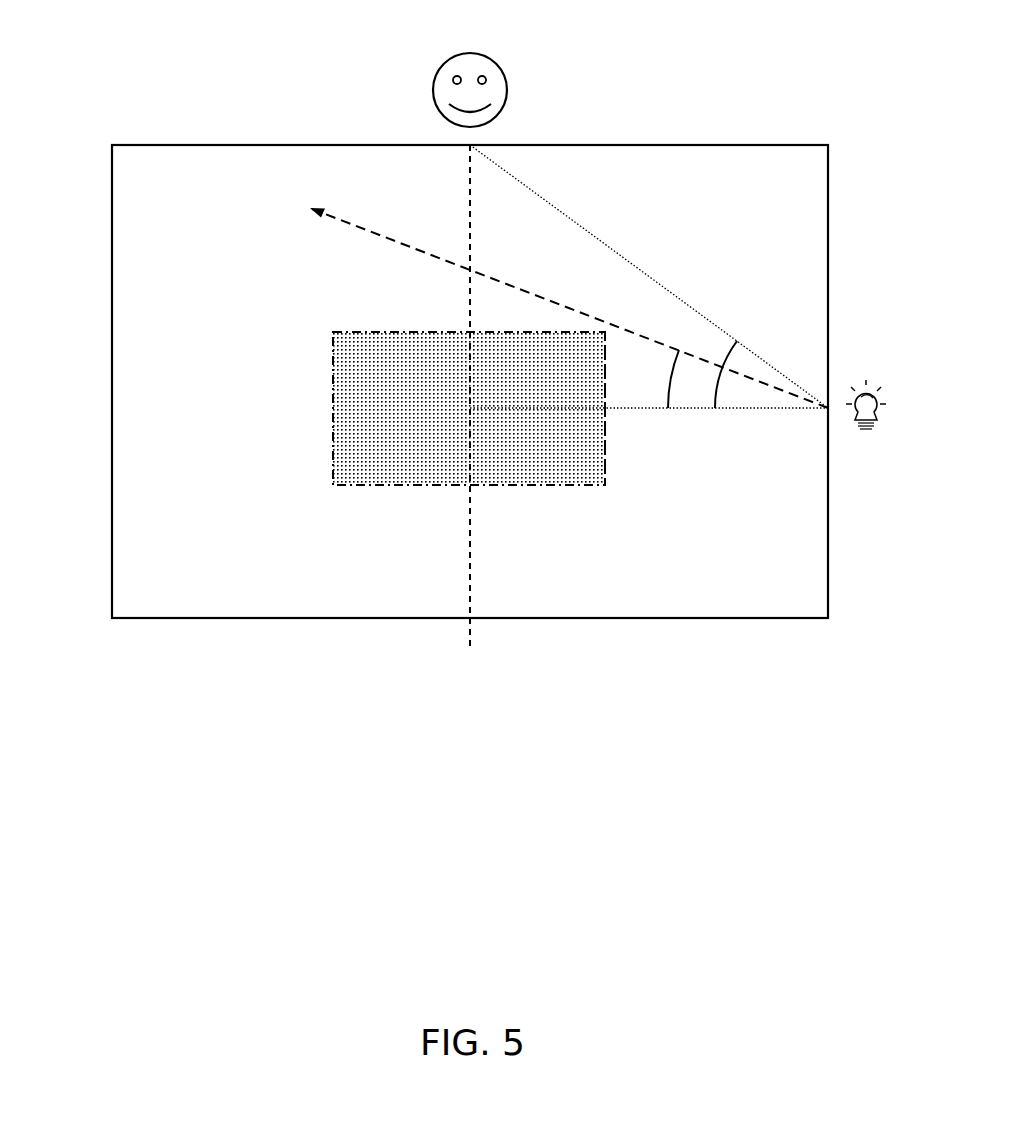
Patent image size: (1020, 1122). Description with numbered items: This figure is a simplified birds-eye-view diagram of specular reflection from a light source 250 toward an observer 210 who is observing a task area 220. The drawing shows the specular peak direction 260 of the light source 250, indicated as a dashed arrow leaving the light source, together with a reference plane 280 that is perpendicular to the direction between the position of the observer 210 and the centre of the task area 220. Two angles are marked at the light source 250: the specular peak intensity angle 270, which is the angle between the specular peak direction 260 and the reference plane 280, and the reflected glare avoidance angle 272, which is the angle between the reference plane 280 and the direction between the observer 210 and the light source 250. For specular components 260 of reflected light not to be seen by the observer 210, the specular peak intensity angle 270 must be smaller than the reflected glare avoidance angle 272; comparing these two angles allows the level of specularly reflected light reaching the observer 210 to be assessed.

The observer 210 is at (420, 73).
The task area 220 is at (355, 450).
The light source 250 is at (867, 442).
The specular peak direction 260 is at (363, 230).
The specular peak intensity angle 270 is at (664, 392).
The reflected glare avoidance angle 272 is at (737, 342).
The reference plane 280 is at (590, 413).